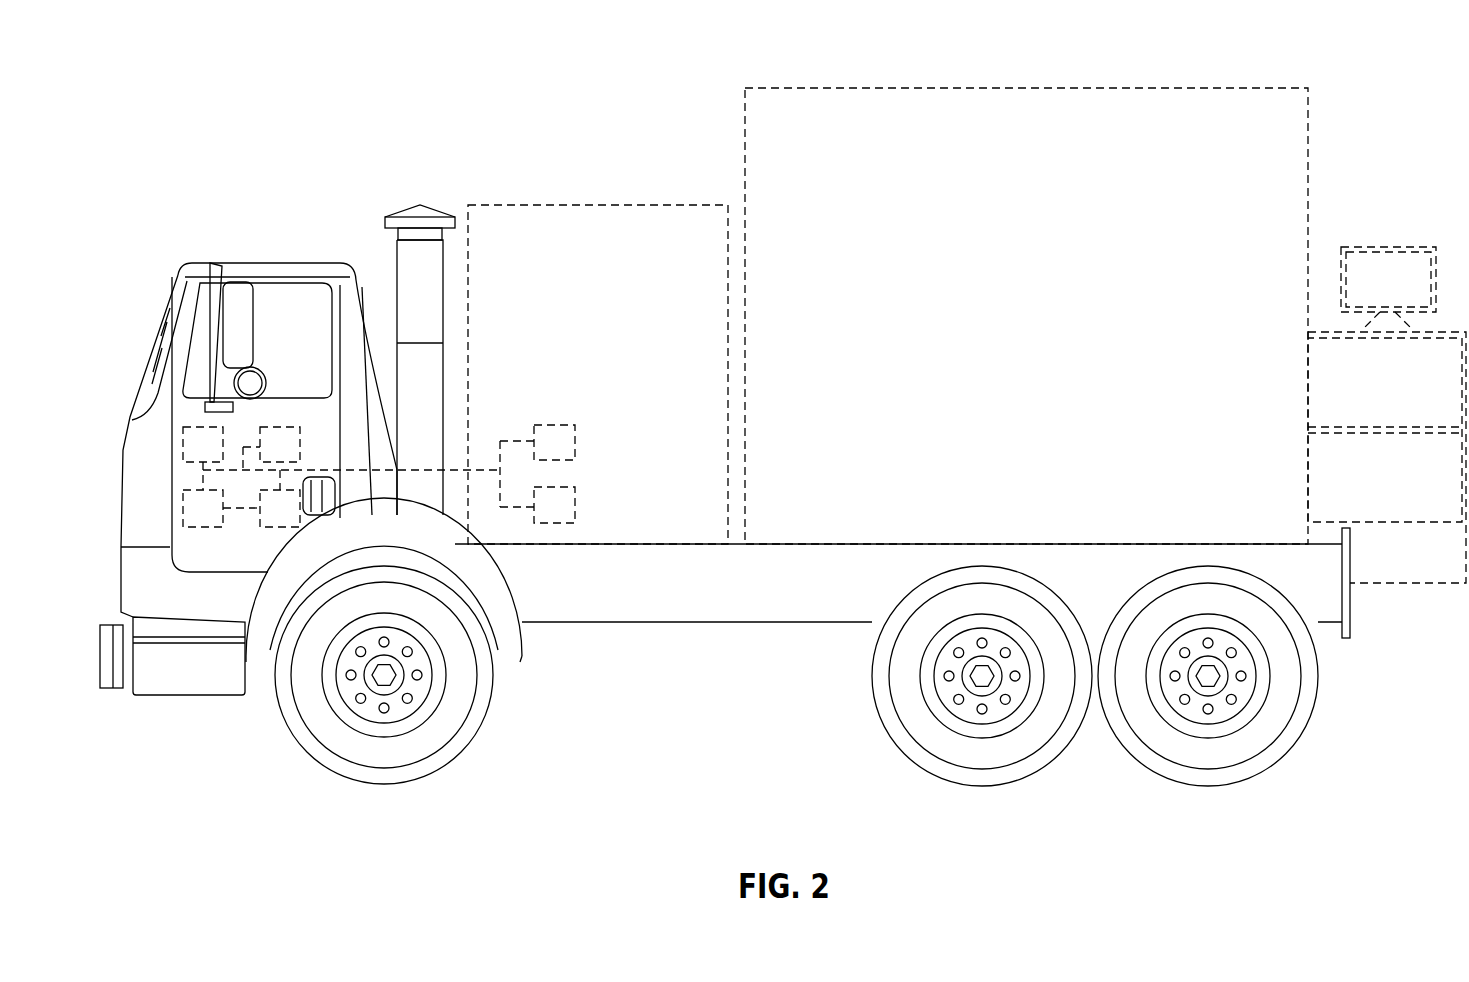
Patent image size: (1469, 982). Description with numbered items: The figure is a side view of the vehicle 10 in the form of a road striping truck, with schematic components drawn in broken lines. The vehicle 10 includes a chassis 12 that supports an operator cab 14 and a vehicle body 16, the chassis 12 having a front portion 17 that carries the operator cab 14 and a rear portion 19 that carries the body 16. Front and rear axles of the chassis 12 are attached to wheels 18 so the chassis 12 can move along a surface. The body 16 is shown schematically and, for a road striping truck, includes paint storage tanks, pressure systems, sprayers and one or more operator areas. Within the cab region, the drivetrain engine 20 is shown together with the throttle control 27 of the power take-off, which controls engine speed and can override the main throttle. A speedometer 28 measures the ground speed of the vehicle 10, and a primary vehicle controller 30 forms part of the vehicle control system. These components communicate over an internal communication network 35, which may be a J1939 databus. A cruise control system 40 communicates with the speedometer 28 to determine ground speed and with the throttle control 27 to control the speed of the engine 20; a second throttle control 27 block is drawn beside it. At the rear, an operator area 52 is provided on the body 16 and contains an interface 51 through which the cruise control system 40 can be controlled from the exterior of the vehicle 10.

The vehicle 10 is at (586, 194).
The chassis 12 is at (556, 633).
The operator cab 14 is at (187, 260).
The vehicle body 16 is at (963, 96).
The front portion 17 is at (175, 675).
The wheels 18 is at (375, 757).
The rear portion 19 is at (831, 609).
The engine 20 is at (188, 521).
The throttle control 27 is at (265, 521).
The speedometer 28 is at (265, 457).
The primary vehicle controller 30 is at (188, 457).
The internal communication network 35 is at (364, 305).
The cruise control system 40 is at (539, 455).
The interface 51 is at (1396, 256).
The operator area 52 is at (1318, 350).